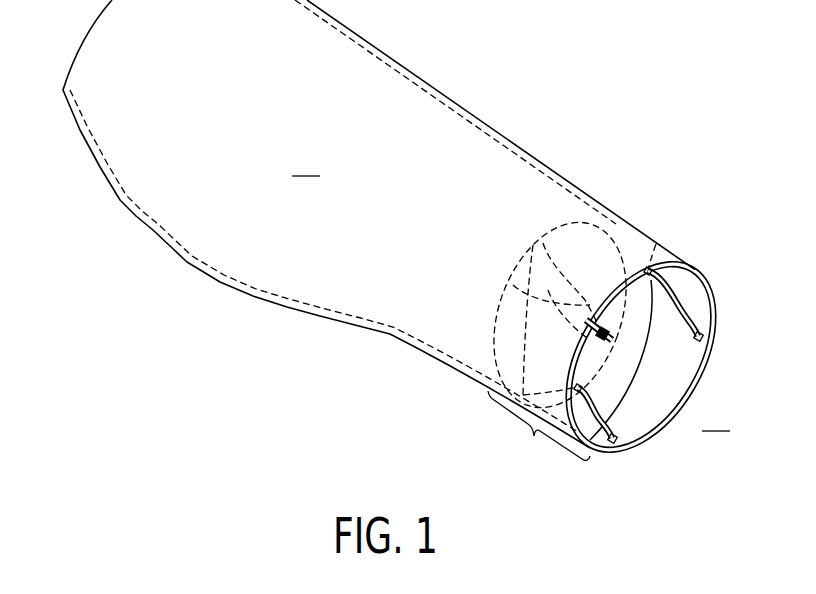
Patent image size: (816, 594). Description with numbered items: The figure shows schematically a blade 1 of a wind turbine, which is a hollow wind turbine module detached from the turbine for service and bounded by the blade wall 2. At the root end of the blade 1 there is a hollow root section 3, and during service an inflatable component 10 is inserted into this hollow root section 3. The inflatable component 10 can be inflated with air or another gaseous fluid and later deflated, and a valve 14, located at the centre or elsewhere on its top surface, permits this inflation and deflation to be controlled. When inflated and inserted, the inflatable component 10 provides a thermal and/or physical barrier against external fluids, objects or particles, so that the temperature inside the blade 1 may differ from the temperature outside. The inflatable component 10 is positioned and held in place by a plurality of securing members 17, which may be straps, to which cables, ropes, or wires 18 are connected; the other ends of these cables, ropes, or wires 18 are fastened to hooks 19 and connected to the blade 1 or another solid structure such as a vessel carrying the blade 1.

The blade 1 is at (403, 70).
The blade wall 2 is at (507, 142).
The hollow root section 3 is at (539, 435).
The inflatable component 10 is at (613, 349).
The valve 14 is at (513, 285).
The securing members 17 is at (548, 290).
The cables, ropes, or wires 18 is at (543, 243).
The hooks 19 is at (710, 318).